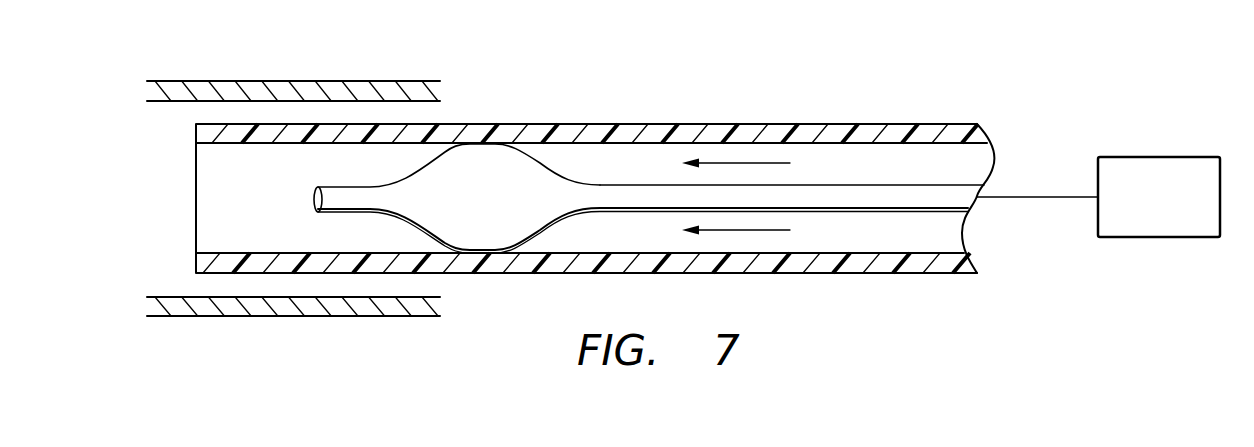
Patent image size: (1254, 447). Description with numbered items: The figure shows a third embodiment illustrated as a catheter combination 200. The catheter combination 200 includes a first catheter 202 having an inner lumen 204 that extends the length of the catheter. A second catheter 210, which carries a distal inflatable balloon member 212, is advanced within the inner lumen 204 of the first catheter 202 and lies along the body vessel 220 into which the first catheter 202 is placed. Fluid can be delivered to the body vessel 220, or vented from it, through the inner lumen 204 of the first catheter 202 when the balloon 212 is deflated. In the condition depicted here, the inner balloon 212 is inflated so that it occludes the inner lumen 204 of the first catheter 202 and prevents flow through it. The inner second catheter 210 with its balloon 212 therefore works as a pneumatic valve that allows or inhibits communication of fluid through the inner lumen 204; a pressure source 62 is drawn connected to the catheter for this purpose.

The catheter combination 200 is at (595, 137).
The first catheter 202 is at (600, 124).
The inner lumen 204 is at (826, 157).
The second catheter 210 is at (900, 194).
The distal inflatable balloon member 212 is at (505, 205).
The body vessel 220 is at (160, 102).
The pressure source 62 is at (1164, 157).